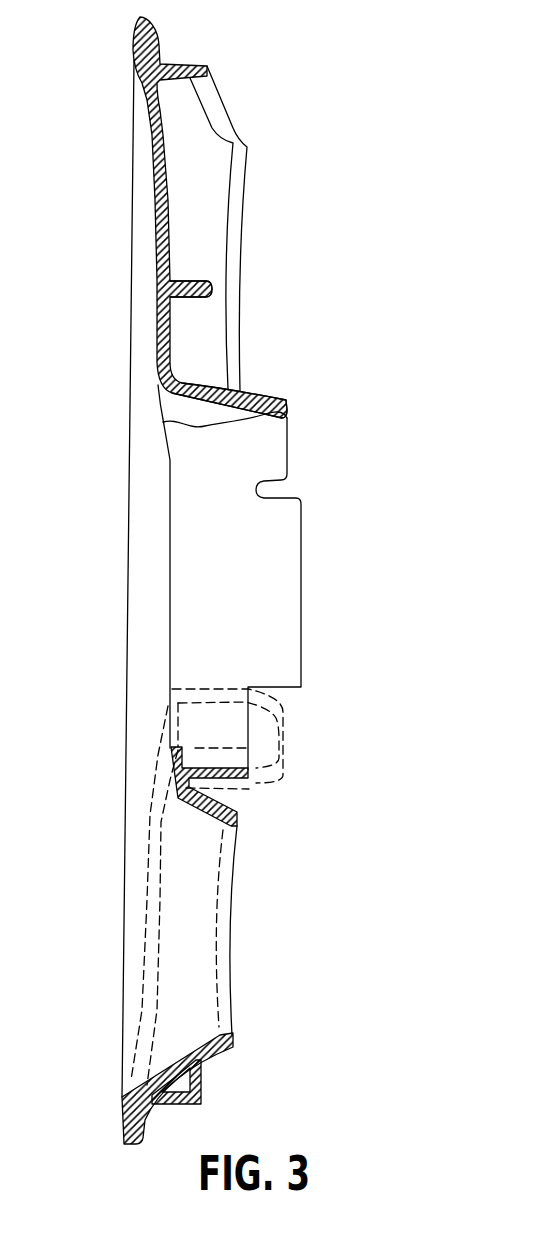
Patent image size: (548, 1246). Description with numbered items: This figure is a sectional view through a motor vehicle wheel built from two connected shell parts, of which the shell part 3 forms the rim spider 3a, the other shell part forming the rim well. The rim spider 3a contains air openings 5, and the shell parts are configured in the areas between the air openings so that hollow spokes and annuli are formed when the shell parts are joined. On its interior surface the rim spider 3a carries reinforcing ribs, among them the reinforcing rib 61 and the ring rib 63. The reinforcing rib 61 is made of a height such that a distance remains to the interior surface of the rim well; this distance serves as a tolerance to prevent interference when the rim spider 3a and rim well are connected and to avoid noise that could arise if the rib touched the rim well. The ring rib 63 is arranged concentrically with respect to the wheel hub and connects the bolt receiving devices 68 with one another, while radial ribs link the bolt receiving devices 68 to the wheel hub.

The shell part 3 is at (152, 80).
The rim spider 3a is at (120, 139).
The reinforcing rib 61 is at (200, 280).
The bolt receiving device 68 is at (252, 384).
The ring rib 63 is at (256, 790).
The air opening 5 is at (163, 921).